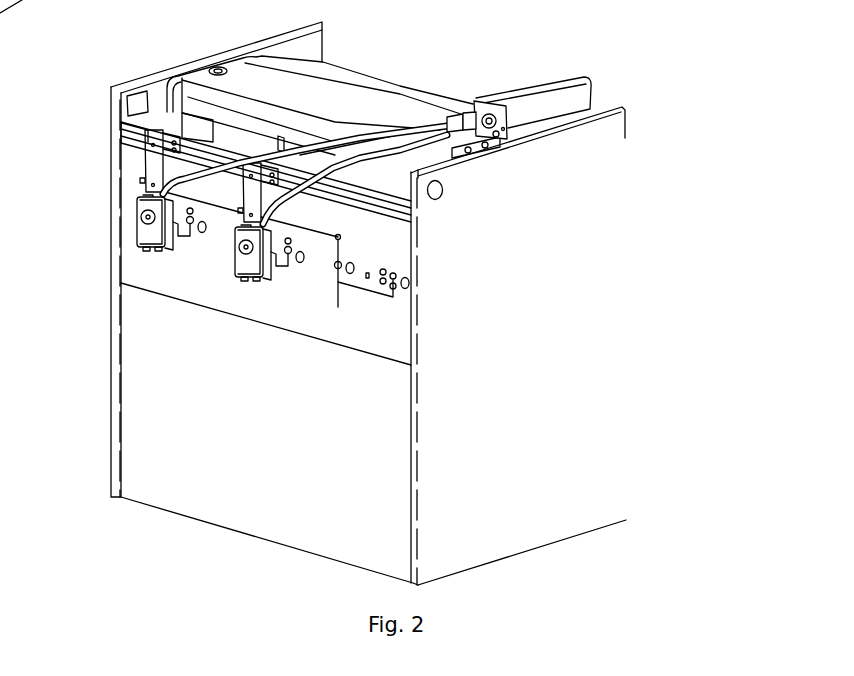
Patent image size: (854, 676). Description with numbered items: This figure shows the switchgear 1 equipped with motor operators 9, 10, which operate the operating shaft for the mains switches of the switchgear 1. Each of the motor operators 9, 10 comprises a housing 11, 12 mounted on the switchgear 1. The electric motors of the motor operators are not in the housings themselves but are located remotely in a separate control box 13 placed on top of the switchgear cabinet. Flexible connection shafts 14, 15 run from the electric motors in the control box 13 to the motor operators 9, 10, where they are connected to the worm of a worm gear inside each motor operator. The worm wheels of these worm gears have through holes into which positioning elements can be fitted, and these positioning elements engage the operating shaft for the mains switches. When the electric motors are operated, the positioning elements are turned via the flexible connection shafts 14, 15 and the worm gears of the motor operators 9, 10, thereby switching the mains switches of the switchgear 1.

The switchgear 1 is at (143, 58).
The motor operator 9 is at (133, 200).
The motor operator 10 is at (227, 273).
The housing 11 is at (152, 232).
The housing 12 is at (258, 264).
The control box 13 is at (558, 83).
The flexible connection shaft 14 is at (320, 143).
The flexible connection shaft 15 is at (402, 148).